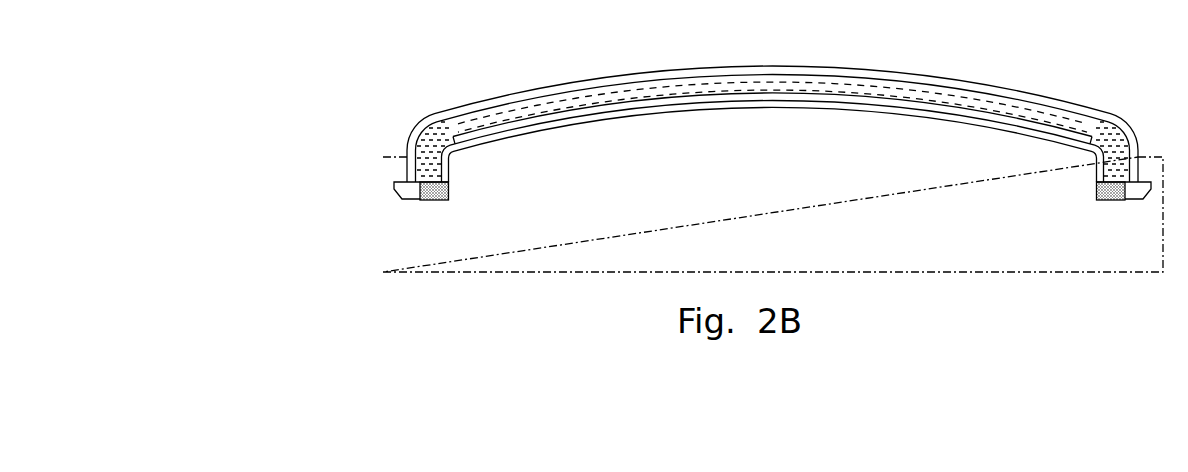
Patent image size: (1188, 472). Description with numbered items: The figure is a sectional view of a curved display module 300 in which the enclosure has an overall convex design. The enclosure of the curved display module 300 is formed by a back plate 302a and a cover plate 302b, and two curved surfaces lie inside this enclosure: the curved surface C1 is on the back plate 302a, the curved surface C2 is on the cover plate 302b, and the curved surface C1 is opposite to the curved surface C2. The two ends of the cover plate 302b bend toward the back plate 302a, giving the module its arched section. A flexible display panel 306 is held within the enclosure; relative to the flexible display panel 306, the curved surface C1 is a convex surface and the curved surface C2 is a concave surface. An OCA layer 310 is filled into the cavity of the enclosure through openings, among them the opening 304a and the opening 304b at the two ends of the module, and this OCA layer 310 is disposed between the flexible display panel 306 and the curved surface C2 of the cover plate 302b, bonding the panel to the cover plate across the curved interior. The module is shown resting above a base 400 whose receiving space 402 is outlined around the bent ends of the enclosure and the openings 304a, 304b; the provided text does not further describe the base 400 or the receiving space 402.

The curved display module 300 is at (760, 100).
The back plate 302a is at (858, 108).
The cover plate 302b is at (884, 73).
The opening 304a is at (431, 200).
The opening 304b is at (1115, 200).
The flexible display panel 306 is at (533, 110).
The OCA layer 310 is at (428, 150).
The base body 400 is at (706, 226).
The receiving space 402 is at (382, 225).
The curved surface C1 is at (697, 106).
The curved surface C2 is at (643, 80).